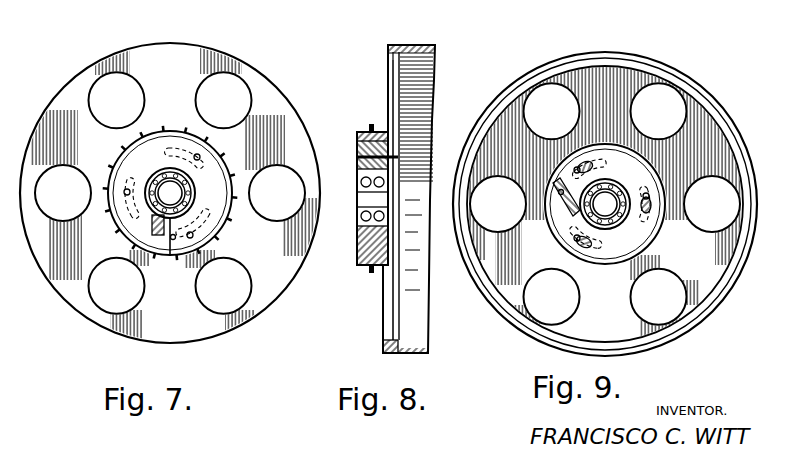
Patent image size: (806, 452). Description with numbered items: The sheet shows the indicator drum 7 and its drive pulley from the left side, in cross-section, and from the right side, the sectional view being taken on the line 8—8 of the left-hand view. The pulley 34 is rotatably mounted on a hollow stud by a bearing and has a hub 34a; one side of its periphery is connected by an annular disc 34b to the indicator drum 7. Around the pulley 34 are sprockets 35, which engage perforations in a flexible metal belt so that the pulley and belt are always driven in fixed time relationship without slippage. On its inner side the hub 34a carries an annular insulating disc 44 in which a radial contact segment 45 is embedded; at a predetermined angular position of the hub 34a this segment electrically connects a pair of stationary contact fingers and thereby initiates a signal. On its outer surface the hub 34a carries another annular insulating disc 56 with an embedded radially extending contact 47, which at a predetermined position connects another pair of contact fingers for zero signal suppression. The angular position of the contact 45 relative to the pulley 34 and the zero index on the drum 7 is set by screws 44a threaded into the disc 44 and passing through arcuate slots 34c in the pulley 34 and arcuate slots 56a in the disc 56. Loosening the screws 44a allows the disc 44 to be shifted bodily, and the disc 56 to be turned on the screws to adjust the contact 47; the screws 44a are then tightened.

In FIG. 8, the indicator drum 7 is at (430, 354).
In FIG. 9, the indicator drum 7 is at (728, 282).
In FIG. 7, the section line 8— 8 is at (246, 52).
In FIG. 7, the pulley 34 is at (232, 220).
In FIG. 8, the pulley 34 is at (360, 264).
In FIG. 9, the pulley 34 is at (605, 204).
In FIG. 7, the hub 34a is at (195, 200).
In FIG. 8, the hub 34a is at (372, 232).
In FIG. 9, the hub 34a is at (608, 226).
In FIG. 7, the annular disc 34b is at (180, 320).
In FIG. 8, the annular disc 34b is at (383, 303).
In FIG. 9, the annular disc 34b is at (723, 250).
In FIG. 7, the arcuate slots 34c is at (167, 189).
In FIG. 9, the arcuate slots 34c is at (592, 158).
In FIG. 7, the sprockets 35 is at (184, 124).
In FIG. 8, the sprockets 35 is at (371, 124).
In FIG. 7, the annular insulating disc 44 is at (116, 234).
In FIG. 8, the annular insulating disc 44 is at (358, 258).
In FIG. 7, the screws 44a is at (124, 192).
In FIG. 8, the screws 44a is at (357, 157).
In FIG. 9, the screws 44a is at (598, 184).
In FIG. 7, the radial contact segment 45 is at (158, 238).
In FIG. 9, the contact segment 47 is at (567, 188).
In FIG. 8, the annular insulating disc 56 is at (388, 242).
In FIG. 9, the annular insulating disc 56 is at (556, 224).
In FIG. 9, the arcuate slots 56a is at (652, 213).